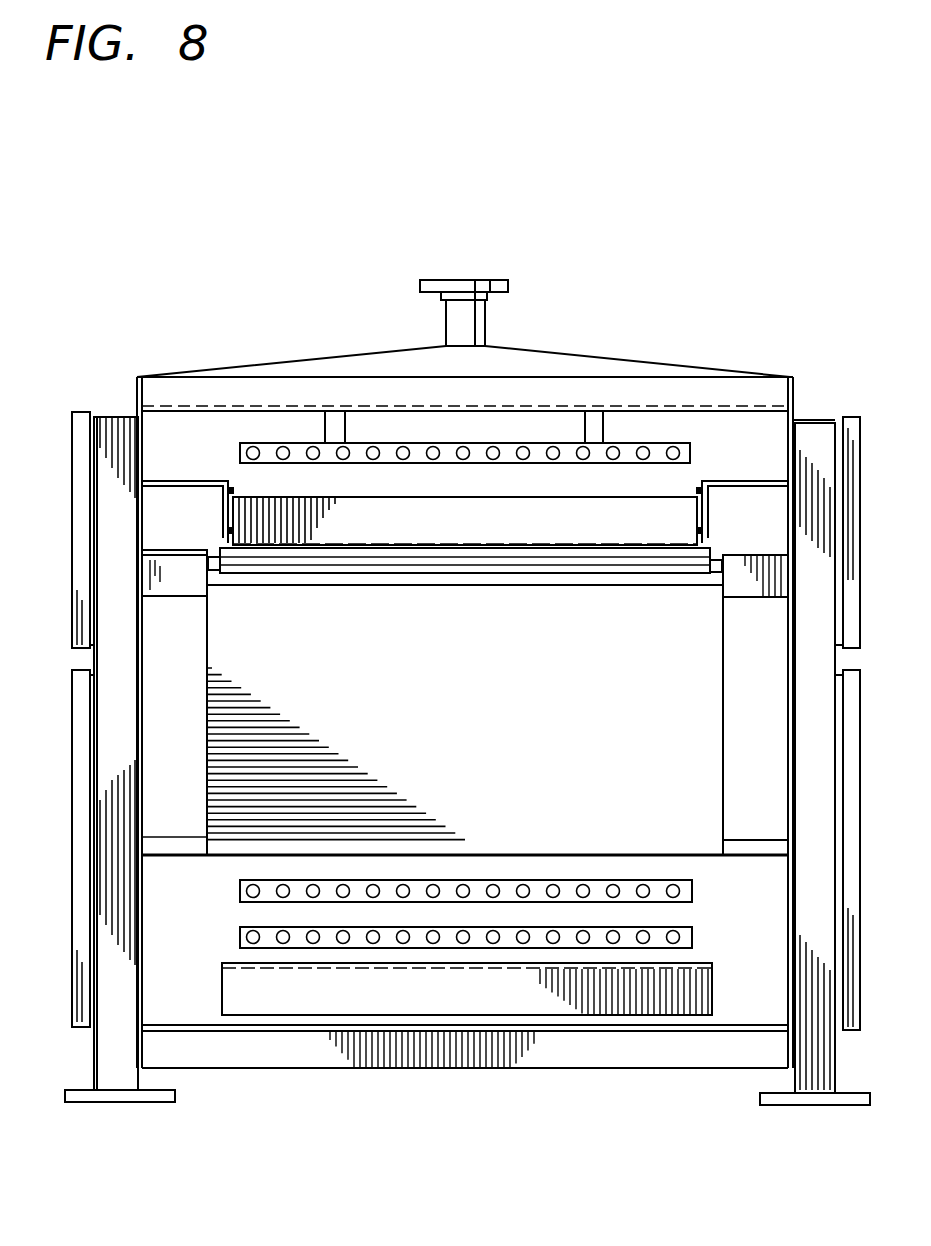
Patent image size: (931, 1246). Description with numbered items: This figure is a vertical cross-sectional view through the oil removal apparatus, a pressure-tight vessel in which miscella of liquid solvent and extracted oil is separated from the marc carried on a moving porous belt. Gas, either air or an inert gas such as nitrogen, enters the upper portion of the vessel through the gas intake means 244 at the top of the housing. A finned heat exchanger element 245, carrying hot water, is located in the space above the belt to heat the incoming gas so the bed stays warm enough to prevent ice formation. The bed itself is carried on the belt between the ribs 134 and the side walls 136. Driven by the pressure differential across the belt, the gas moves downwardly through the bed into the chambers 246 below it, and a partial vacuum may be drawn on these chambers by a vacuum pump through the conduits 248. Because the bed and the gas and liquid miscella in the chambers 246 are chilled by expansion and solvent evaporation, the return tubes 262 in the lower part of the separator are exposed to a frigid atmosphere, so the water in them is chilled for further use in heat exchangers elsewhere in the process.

The gas intake means 244 is at (467, 278).
The upper heater lamp array 245 is at (690, 452).
The ribs 134 is at (490, 532).
The side walls 136 is at (712, 519).
The chambers 246 is at (492, 733).
The conduits 248 is at (755, 838).
The return tubes 262 is at (692, 892).